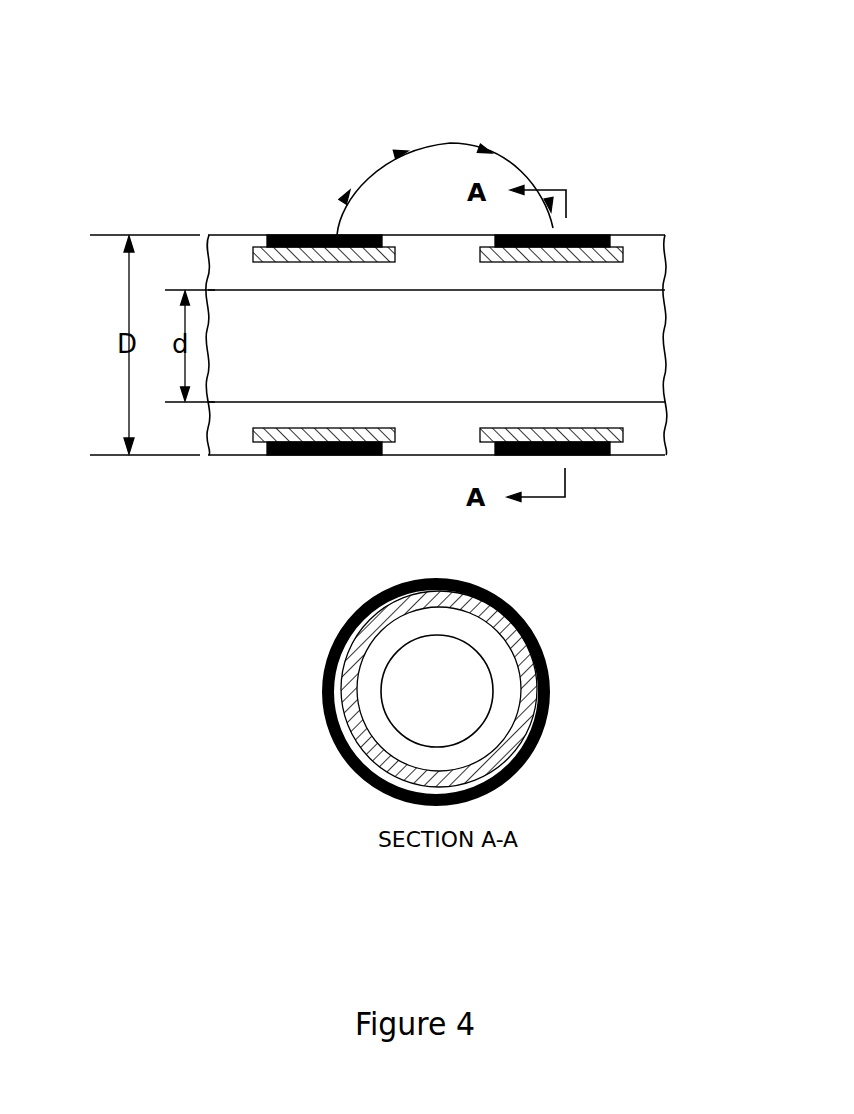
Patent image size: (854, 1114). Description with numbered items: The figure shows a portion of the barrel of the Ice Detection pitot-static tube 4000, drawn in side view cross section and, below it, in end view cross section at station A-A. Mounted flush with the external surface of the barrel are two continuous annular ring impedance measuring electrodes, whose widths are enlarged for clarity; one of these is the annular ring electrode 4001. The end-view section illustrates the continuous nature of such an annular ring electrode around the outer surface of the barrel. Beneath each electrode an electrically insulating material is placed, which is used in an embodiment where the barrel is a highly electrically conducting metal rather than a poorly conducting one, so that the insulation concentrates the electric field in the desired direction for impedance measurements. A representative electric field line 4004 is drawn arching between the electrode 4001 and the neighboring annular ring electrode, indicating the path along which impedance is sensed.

The barrel portion of the Ice Detection pitot-static tube 4000 is at (262, 70).
The annular ring electrode 4001 is at (327, 233).
The electric field line 4004 is at (382, 158).